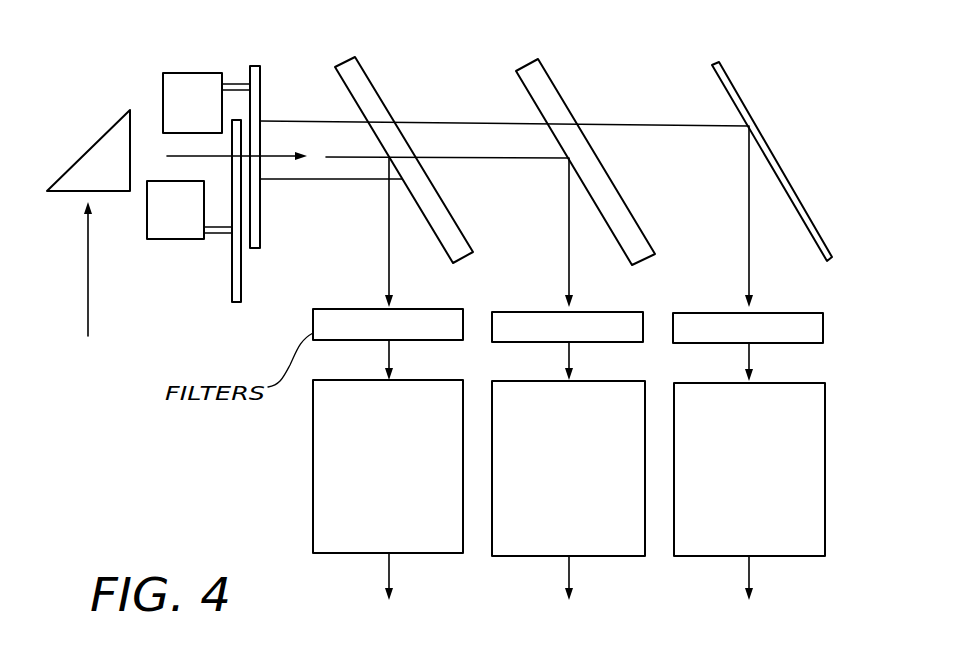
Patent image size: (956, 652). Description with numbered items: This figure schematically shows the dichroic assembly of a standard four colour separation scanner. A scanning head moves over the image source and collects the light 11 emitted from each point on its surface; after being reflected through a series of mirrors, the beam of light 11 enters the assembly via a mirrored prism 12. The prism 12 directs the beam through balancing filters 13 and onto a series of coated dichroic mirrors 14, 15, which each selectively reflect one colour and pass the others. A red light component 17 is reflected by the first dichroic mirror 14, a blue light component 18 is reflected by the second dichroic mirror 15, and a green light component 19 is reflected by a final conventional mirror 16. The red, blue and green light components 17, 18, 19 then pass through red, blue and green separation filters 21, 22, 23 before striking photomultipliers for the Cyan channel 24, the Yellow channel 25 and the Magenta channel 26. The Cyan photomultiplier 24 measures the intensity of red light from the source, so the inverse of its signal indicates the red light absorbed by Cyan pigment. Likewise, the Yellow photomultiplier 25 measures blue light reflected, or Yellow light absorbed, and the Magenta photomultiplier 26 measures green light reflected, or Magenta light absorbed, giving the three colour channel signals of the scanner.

The light 11 is at (88, 277).
The mirrored prism 12 is at (80, 152).
The balancing filters 13 is at (260, 80).
The first dichroic mirror 14 is at (380, 92).
The second dichroic mirror 15 is at (558, 87).
The final conventional mirror 16 is at (732, 87).
The red light component 17 is at (390, 265).
The blue light component 18 is at (568, 267).
The green light component 19 is at (748, 257).
The red separation filter 21 is at (413, 340).
The blue separation filter 22 is at (595, 342).
The green separation filter 23 is at (823, 323).
The Cyan photomultiplier 24 is at (313, 479).
The Yellow photomultiplier 25 is at (605, 556).
The Magenta photomultiplier 26 is at (795, 556).